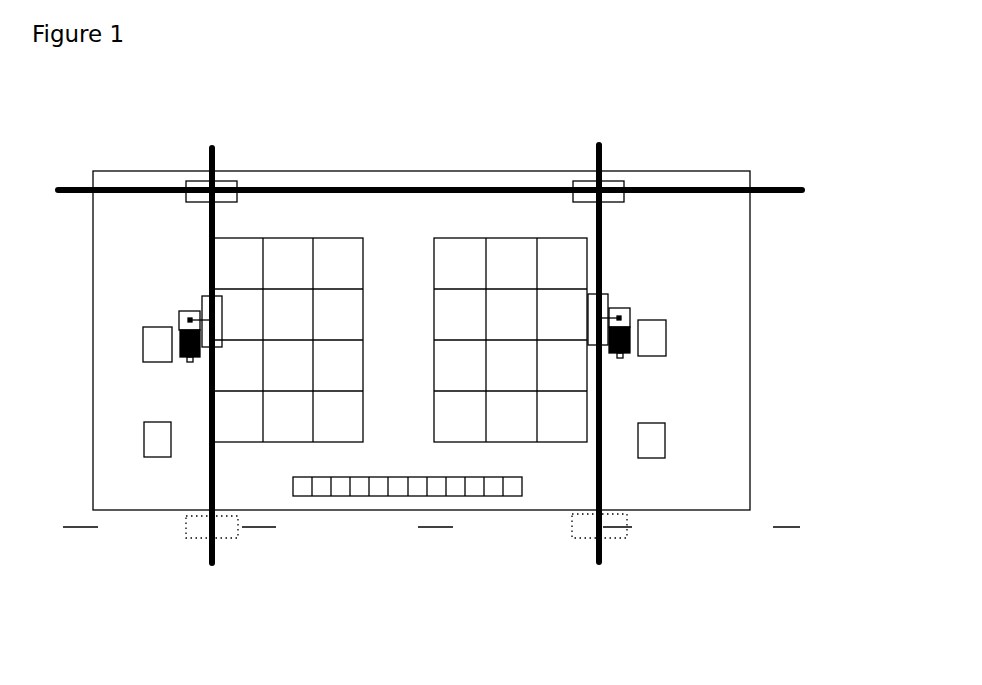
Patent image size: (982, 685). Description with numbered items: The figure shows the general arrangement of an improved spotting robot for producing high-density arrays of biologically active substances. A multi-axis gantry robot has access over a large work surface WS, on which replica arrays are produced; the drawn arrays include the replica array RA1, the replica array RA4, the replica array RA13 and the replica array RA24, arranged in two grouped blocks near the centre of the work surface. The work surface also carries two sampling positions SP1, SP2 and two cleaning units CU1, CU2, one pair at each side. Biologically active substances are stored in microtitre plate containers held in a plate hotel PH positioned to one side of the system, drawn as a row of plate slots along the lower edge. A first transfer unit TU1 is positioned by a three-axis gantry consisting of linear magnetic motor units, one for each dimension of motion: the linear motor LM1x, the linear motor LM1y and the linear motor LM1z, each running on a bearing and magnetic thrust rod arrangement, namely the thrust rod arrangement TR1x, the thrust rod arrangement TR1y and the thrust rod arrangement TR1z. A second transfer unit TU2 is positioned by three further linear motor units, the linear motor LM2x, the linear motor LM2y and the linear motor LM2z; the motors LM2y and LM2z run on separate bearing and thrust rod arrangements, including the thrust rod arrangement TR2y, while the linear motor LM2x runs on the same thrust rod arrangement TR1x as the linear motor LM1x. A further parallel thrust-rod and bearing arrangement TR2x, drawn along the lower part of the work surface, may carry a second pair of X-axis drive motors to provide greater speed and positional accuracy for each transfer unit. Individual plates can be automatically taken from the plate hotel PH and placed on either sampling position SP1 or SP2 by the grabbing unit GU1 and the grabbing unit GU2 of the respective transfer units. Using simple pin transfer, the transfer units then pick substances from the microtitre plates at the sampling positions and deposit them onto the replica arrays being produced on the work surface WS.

The work surface WS is at (382, 171).
The bearing and magnetic thrust rod arrangement TR1x is at (473, 187).
The parallel thrust-rod and bearing arrangement TR2x is at (476, 524).
The bearing and magnetic thrust rod arrangement TR1y is at (210, 378).
The bearing and thrust rod arrangement TR2y is at (600, 376).
The bearing and magnetic thrust rod arrangement TR1z is at (186, 316).
The linear magnetic motor unit LM1x is at (196, 181).
The linear motor unit LM2x is at (612, 181).
The linear magnetic motor unit LM1y is at (238, 321).
The linear magnetic motor unit LM2y is at (572, 319).
The linear magnetic motor unit LM1z is at (186, 312).
The linear magnetic motor unit LM2z is at (630, 310).
The first transfer unit TU1 is at (183, 337).
The second transfer unit TU2 is at (630, 330).
The grabbing unit GU1 is at (188, 361).
The grabbing unit GU2 is at (621, 357).
The sampling position SP1 is at (152, 348).
The sampling position SP2 is at (657, 337).
The cleaning unit CU1 is at (157, 438).
The cleaning unit CU2 is at (651, 438).
The replica array RA1 is at (288, 340).
The replica array RA4 is at (237, 420).
The replica array RA13 is at (510, 340).
The replica array RA24 is at (560, 420).
The plate hotel PH is at (401, 488).